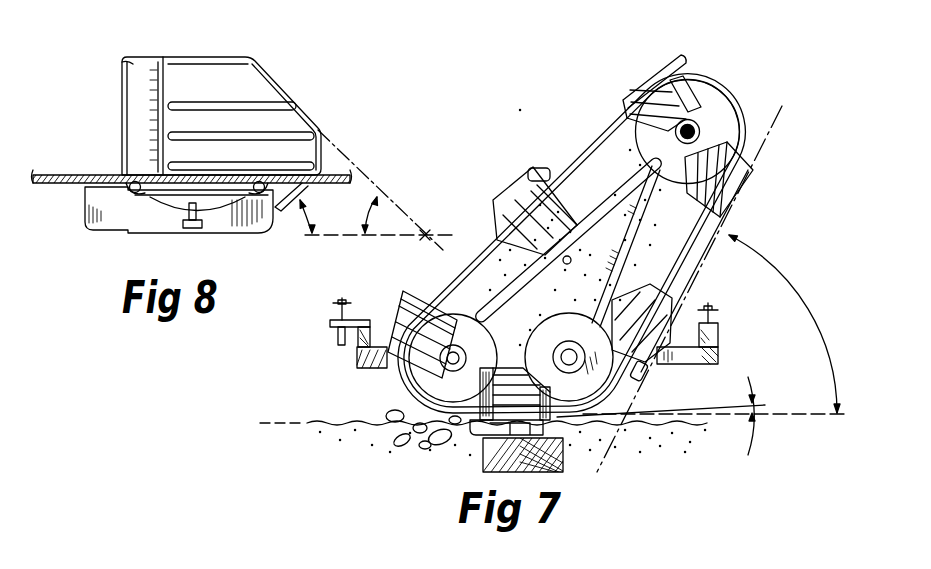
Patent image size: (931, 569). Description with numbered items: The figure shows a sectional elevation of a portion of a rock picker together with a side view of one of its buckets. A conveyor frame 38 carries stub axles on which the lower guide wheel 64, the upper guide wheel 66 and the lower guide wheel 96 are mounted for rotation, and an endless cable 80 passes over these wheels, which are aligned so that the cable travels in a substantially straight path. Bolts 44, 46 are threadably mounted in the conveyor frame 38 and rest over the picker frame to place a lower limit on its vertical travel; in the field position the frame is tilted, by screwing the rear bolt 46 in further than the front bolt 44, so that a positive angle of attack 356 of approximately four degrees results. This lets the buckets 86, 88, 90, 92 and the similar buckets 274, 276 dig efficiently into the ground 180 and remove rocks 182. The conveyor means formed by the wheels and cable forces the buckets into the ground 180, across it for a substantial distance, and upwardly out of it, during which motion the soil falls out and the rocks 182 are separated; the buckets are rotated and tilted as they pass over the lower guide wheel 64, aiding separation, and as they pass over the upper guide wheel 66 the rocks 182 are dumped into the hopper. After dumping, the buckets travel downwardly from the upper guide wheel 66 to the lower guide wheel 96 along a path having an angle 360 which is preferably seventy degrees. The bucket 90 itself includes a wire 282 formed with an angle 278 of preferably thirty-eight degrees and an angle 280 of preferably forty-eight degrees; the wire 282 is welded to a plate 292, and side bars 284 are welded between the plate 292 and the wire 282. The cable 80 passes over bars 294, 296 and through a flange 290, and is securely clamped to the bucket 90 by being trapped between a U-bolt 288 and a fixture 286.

In FIG. 7, the conveyor frame 38 is at (627, 177).
In FIG. 7, the bolt 44 is at (332, 305).
In FIG. 7, the bolt 46 is at (718, 315).
In FIG. 7, the lower guide wheel 64 is at (460, 320).
In FIG. 7, the upper guide wheel 66 is at (707, 97).
In FIG. 8, the cable 80 is at (52, 175).
In FIG. 7, the cable 80 is at (590, 148).
In FIG. 7, the bucket 86 is at (748, 177).
In FIG. 7, the bucket 88 is at (530, 177).
In FIG. 8, the bucket 90 is at (121, 63).
In FIG. 7, the bucket 90 is at (483, 437).
In FIG. 7, the bucket 92 is at (410, 295).
In FIG. 7, the lower guide wheel 96 is at (562, 312).
In FIG. 7, the ground 180 is at (330, 420).
In FIG. 7, the rocks 182 is at (423, 437).
In FIG. 7, the bucket 274 is at (680, 53).
In FIG. 7, the bucket 276 is at (645, 375).
In FIG. 8, the angle 278 is at (331, 212).
In FIG. 8, the angle 280 is at (380, 197).
In FIG. 8, the wire 282 is at (253, 62).
In FIG. 8, the side bars 284 is at (241, 167).
In FIG. 8, the fixture 286 is at (188, 222).
In FIG. 8, the U-bolt 288 is at (200, 229).
In FIG. 8, the flange 290 is at (140, 233).
In FIG. 8, the plate 292 is at (121, 88).
In FIG. 8, the bar 294 is at (125, 188).
In FIG. 8, the bar 296 is at (270, 198).
In FIG. 7, the angle of attack 356 is at (753, 440).
In FIG. 7, the angle 360 is at (715, 289).